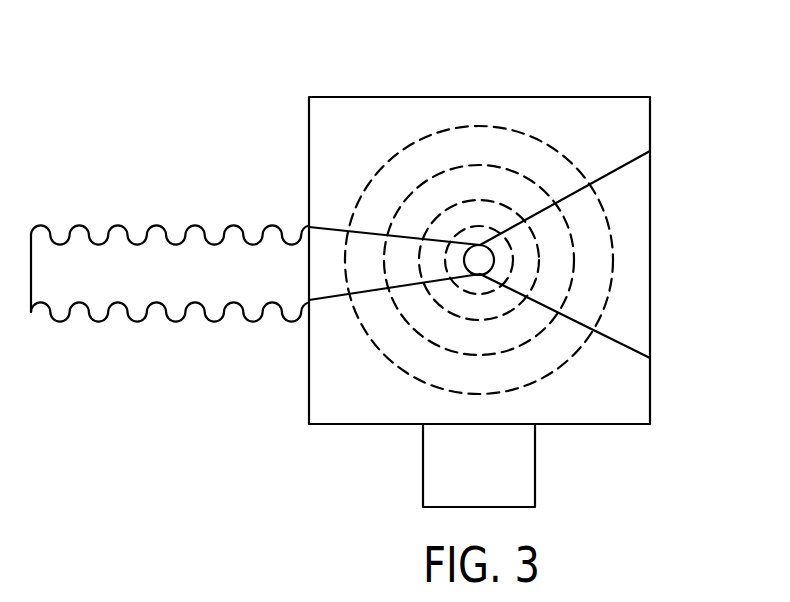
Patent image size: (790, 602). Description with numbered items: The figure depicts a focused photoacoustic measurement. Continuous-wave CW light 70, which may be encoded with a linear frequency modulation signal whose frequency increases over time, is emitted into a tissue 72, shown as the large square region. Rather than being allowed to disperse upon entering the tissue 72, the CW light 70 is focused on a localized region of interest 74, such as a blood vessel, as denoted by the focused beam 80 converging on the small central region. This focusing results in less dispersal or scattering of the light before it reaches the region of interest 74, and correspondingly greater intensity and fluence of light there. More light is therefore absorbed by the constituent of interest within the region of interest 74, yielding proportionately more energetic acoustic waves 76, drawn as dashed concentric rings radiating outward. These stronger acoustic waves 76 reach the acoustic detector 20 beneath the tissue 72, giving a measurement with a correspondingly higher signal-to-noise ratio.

The acoustic detector 20 is at (535, 465).
The CW light 70 is at (155, 225).
The tissue 72 is at (575, 97).
The region of interest 74 is at (480, 245).
The acoustic waves 76 is at (573, 240).
The focused beam 80 is at (407, 238).